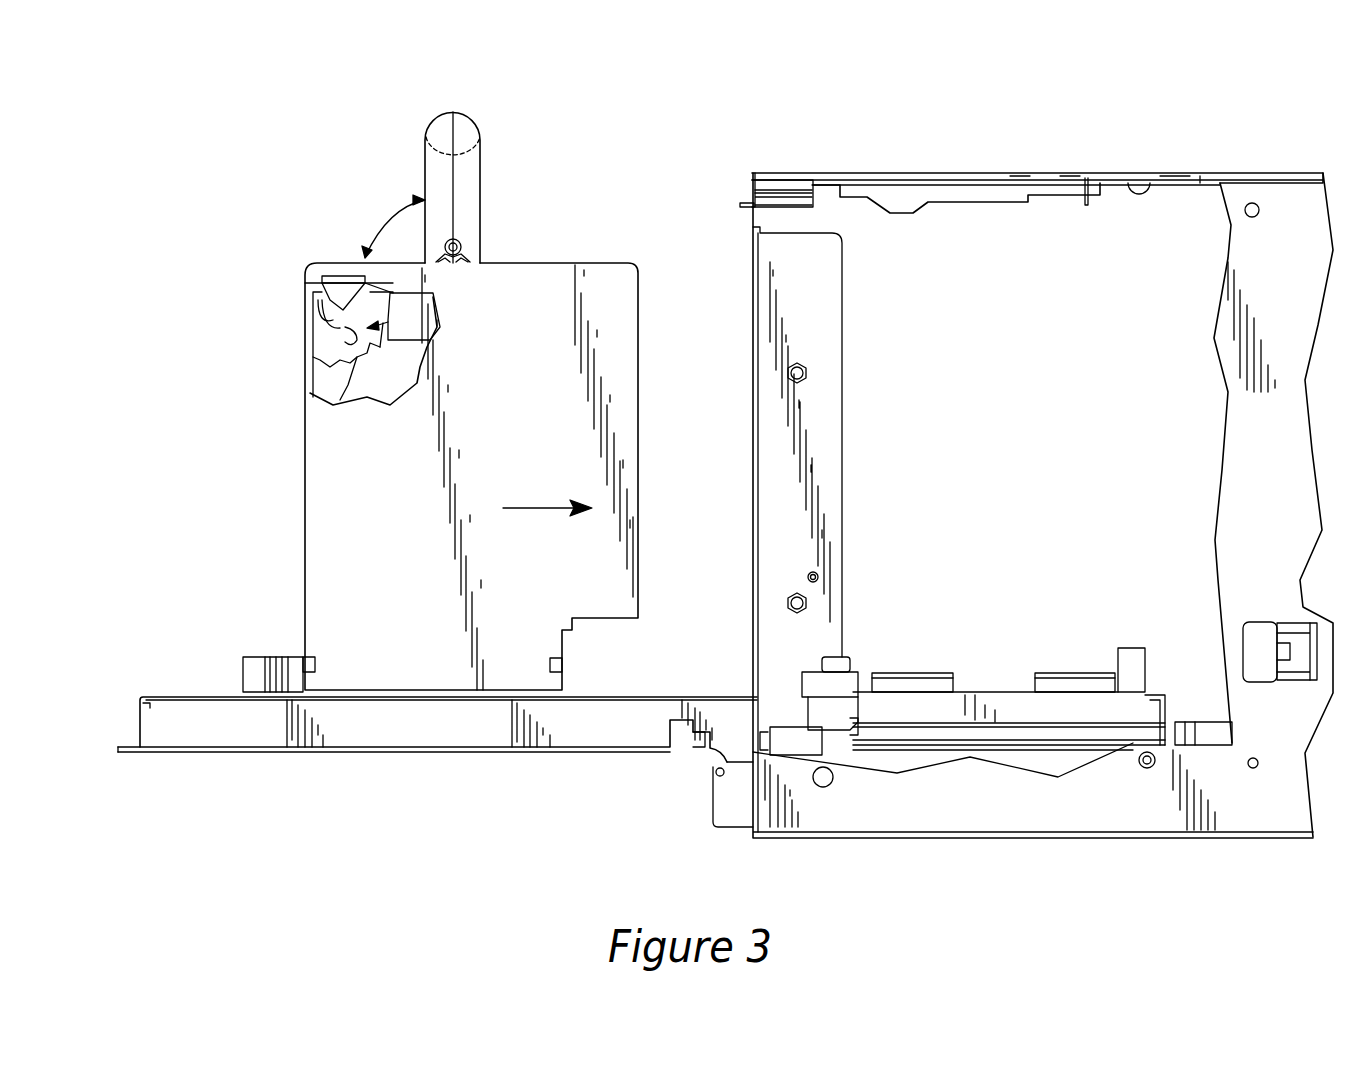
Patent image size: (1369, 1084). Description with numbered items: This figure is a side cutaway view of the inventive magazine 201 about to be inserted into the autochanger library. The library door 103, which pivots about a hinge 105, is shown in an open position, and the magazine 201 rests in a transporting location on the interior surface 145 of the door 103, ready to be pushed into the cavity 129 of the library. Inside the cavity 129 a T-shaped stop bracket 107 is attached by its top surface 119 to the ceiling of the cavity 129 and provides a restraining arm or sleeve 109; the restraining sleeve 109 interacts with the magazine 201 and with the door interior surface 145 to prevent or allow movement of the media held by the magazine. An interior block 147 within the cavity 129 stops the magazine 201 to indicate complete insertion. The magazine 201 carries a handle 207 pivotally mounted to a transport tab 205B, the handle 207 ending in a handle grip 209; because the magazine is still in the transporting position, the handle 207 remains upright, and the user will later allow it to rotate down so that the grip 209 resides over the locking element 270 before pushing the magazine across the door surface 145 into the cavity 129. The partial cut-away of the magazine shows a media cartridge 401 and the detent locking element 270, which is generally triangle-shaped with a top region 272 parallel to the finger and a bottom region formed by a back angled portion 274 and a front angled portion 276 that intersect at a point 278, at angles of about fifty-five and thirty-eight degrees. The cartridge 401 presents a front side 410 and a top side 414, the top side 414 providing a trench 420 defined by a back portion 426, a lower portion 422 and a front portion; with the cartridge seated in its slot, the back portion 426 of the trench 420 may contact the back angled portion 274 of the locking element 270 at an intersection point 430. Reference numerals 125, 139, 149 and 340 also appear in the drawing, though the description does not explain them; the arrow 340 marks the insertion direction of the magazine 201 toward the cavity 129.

The door 103 is at (355, 753).
The hinge 105 is at (713, 768).
The stop bracket 107 is at (803, 180).
The restraining sleeve 109 is at (908, 200).
The top surface 119 is at (1153, 173).
The tab 125 is at (742, 203).
The cavity 129 is at (778, 513).
The bracket 139 is at (753, 190).
The interior surface 145 is at (178, 697).
The interior block 147 is at (1150, 655).
The alignment tab 149 is at (570, 665).
The magazine 201 is at (263, 498).
The transport tab 205B is at (462, 240).
The handle 207 is at (480, 170).
The handle grip 209 is at (465, 125).
The locking element 270 is at (347, 285).
The top region 272 is at (330, 278).
The back angled portion 274 is at (345, 333).
The front angled portion 276 is at (380, 308).
The point 278 is at (340, 338).
The insertion direction 340 is at (648, 498).
The media cartridge 401 is at (392, 367).
The front side 410 is at (640, 413).
The top side 414 is at (318, 315).
The trench 420 is at (400, 330).
The lower portion 422 is at (380, 400).
The back portion 426 is at (360, 340).
The intersection point 430 is at (315, 328).